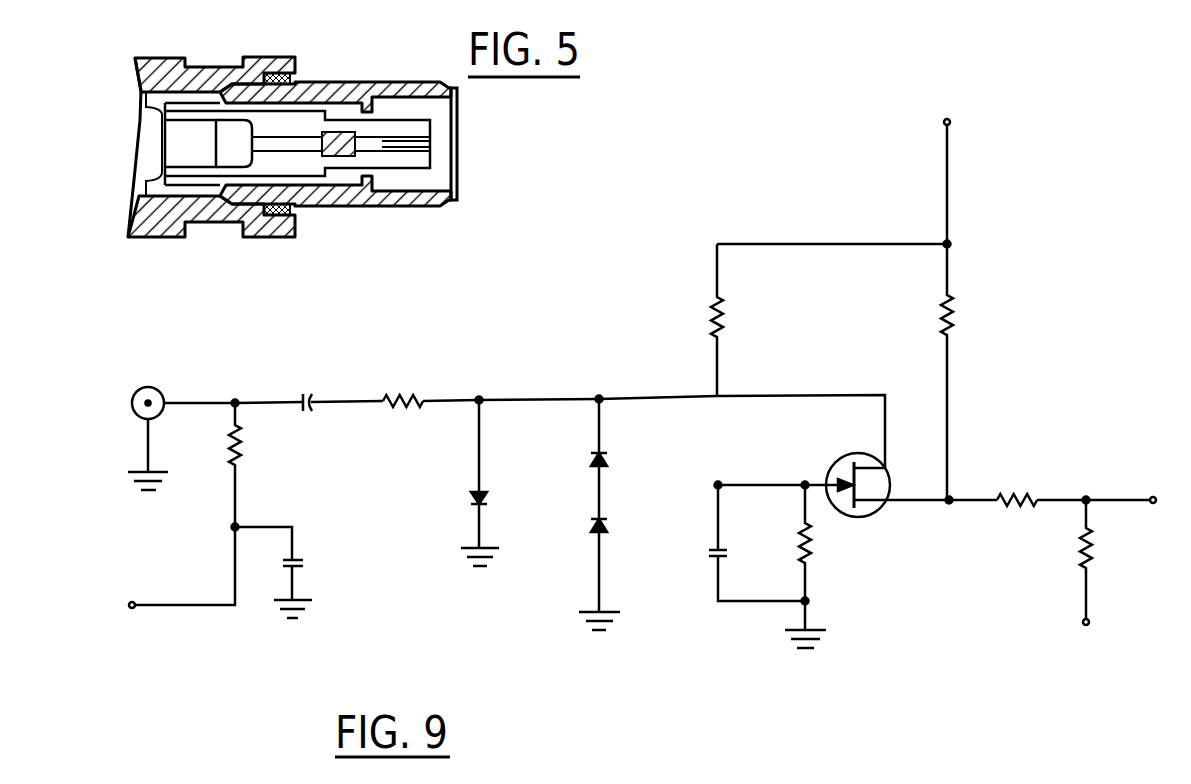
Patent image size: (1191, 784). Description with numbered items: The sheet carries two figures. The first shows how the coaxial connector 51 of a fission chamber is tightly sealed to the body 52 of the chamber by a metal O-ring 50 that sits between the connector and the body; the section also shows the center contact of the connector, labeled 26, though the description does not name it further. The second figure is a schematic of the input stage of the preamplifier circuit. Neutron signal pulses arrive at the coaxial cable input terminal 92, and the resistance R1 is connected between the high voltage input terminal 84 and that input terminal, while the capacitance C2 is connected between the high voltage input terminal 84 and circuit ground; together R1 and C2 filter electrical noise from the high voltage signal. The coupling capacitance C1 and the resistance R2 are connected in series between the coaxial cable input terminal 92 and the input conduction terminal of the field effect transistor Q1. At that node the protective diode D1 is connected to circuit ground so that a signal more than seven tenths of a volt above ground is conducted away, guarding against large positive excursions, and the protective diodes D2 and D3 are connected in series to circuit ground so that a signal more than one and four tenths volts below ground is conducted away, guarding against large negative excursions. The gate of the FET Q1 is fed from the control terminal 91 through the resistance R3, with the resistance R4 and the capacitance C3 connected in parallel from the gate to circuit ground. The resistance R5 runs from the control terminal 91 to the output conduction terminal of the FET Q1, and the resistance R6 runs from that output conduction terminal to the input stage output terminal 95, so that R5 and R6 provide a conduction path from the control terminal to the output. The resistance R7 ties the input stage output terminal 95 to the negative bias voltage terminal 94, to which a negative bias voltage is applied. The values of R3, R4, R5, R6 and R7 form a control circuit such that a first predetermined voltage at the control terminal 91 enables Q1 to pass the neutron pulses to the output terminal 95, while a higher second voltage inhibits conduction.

In FIG. 5, the body 52 is at (239, 60).
In FIG. 5, the metal O-ring 50 is at (282, 74).
In FIG. 5, the coaxial connector 51 is at (403, 82).
In FIG. 5, the center contact pin 26 is at (293, 147).
In FIG. 9, the control terminal 91 is at (945, 120).
In FIG. 9, the coaxial cable input terminal 92 is at (150, 386).
In FIG. 9, the high voltage input terminal 84 is at (121, 584).
In FIG. 9, the negative bias voltage terminal 94 is at (1090, 622).
In FIG. 9, the input stage output terminal 95 is at (1167, 481).
In FIG. 9, the resistance R1 is at (252, 465).
In FIG. 9, the resistance R2 is at (403, 386).
In FIG. 9, the resistance R3 is at (735, 320).
In FIG. 9, the resistance R4 is at (796, 565).
In FIG. 9, the resistance R5 is at (966, 312).
In FIG. 9, the resistance R6 is at (1017, 487).
In FIG. 9, the resistance R7 is at (1105, 558).
In FIG. 9, the capacitance C1 is at (308, 387).
In FIG. 9, the capacitance C2 is at (284, 572).
In FIG. 9, the capacitance C3 is at (699, 525).
In FIG. 9, the protective diode D1 is at (493, 482).
In FIG. 9, the protective diode D2 is at (618, 458).
In FIG. 9, the protective diode D3 is at (612, 572).
In FIG. 9, the field effect transistor Q1 is at (889, 494).